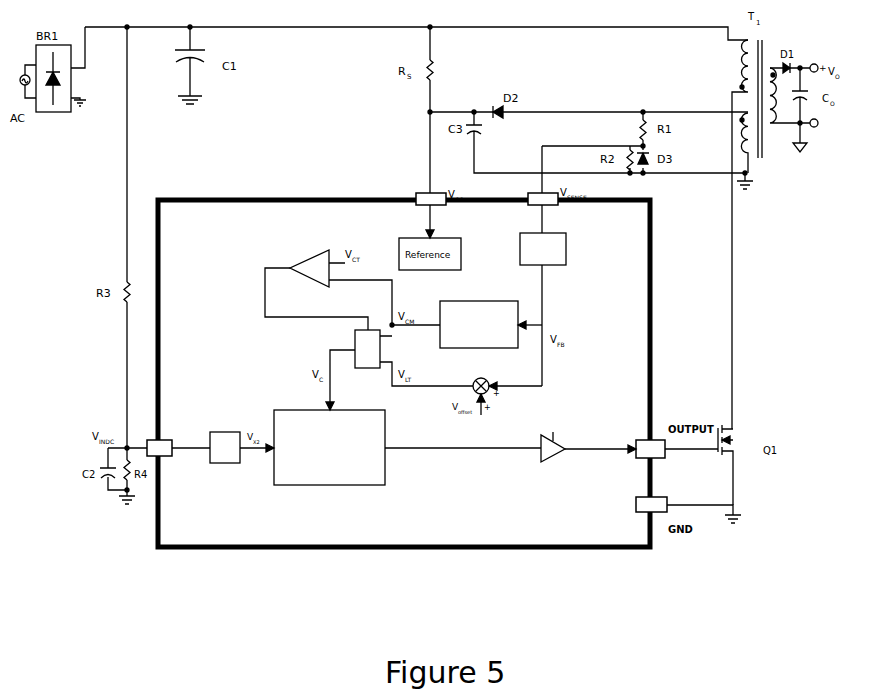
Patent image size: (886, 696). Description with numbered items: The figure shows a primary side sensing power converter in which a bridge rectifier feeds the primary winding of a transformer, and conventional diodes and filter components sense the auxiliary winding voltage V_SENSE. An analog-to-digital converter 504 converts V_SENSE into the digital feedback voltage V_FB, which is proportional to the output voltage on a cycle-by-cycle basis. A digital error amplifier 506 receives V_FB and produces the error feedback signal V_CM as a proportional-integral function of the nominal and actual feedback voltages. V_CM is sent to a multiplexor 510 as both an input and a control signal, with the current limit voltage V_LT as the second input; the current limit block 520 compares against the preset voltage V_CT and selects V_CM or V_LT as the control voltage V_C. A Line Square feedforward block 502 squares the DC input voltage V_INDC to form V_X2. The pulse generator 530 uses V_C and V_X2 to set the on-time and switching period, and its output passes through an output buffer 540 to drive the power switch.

The Line Square feedforward block 502 is at (224, 441).
The analog-to-digital converter 504 is at (557, 235).
The digital error amplifier 506 is at (479, 318).
The multiplexer 510 is at (356, 347).
The current limit block 520 is at (341, 284).
The pulse generator 530 is at (329, 447).
The output buffer 540 is at (552, 457).